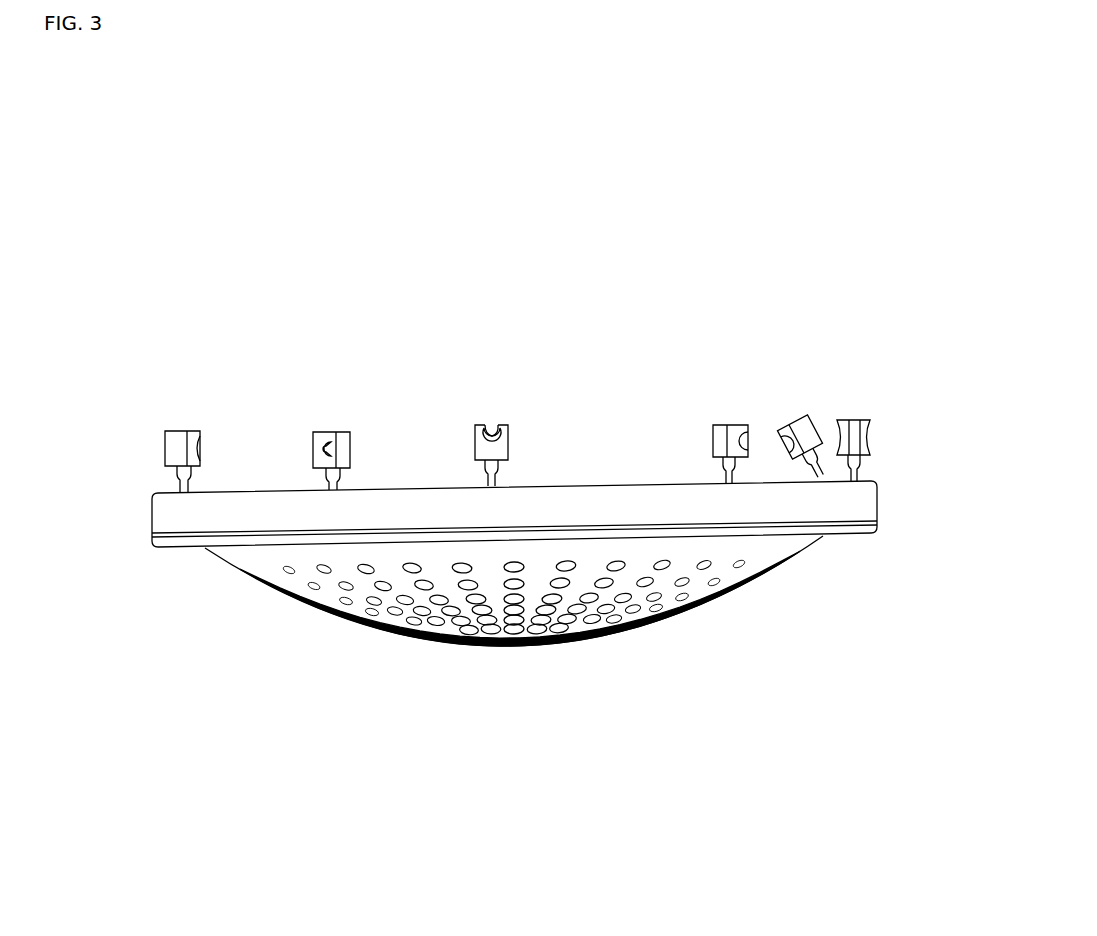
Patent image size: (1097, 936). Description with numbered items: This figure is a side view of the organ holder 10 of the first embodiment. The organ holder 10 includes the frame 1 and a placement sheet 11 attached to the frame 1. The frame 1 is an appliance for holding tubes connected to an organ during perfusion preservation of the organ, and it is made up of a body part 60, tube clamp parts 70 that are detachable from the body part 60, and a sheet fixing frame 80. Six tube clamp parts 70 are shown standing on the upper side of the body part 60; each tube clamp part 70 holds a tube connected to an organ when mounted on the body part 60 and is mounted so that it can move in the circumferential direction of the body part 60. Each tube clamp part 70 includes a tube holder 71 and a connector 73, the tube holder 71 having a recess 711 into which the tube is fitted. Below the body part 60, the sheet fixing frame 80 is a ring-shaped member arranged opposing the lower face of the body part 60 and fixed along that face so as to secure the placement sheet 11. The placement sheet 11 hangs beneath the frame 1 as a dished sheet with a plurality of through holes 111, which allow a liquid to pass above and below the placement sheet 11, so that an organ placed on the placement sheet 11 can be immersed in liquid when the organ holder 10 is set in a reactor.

The frame 1 is at (242, 336).
The organ holder 10 is at (644, 204).
The placement sheet 11 is at (878, 523).
The through holes 111 is at (545, 640).
The body part 60 is at (437, 512).
The tube clamp part 70 is at (517, 407).
The tube holder 71 is at (165, 440).
The recess 711 is at (506, 436).
The connector 73 is at (178, 471).
The sheet fixing frame 80 is at (850, 531).